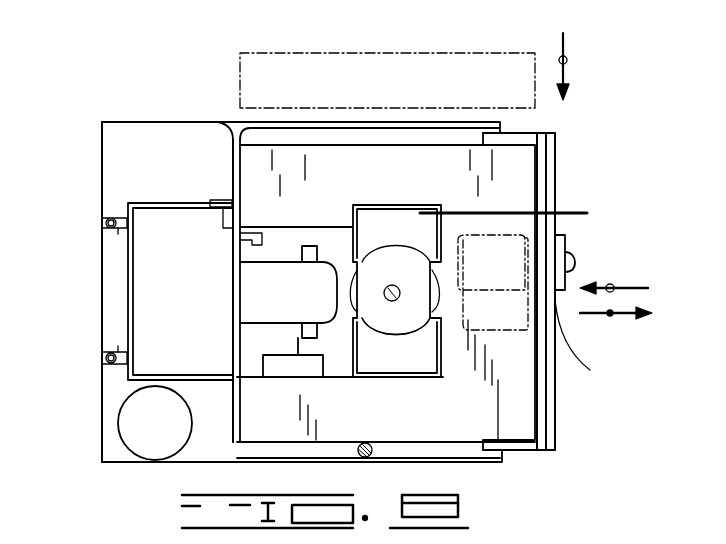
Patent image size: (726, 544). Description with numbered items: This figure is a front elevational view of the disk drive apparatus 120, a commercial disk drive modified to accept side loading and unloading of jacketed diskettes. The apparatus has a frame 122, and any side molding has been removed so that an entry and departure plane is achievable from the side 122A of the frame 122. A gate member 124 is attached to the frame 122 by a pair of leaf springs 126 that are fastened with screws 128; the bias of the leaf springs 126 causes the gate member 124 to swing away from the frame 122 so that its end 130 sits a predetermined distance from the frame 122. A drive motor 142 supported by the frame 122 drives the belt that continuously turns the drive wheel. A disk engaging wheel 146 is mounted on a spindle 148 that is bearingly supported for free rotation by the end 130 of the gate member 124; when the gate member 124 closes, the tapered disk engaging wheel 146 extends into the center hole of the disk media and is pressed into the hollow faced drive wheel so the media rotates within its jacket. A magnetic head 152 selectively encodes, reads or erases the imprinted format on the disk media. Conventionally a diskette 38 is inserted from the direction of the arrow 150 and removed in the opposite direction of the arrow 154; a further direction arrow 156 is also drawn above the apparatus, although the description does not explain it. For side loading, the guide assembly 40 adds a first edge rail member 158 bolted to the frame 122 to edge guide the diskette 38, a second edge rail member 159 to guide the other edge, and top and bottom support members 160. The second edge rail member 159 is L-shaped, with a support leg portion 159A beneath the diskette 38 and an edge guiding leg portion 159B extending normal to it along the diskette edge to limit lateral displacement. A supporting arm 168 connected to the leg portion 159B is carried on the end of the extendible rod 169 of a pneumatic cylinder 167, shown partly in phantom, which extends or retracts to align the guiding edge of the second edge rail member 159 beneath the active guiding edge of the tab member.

The disk drive apparatus 120 is at (108, 112).
The frame 122 is at (102, 162).
The side of the frame 122A is at (228, 132).
The guide assembly 40 is at (226, 126).
The first edge rail member 158 is at (233, 160).
The diskette 38 is at (298, 69).
The gate member 124 is at (183, 202).
The screws 128 is at (108, 220).
The leaf springs 126 is at (118, 230).
The drive motor 142 is at (160, 440).
The end of the gate member 130 is at (428, 200).
The magnetic head 152 is at (272, 272).
The top and bottom support members 160 is at (240, 250).
The spindle 148 is at (400, 294).
The disk engaging wheel 146 is at (418, 335).
The second edge rail member 159 is at (556, 182).
The support leg portion 159A is at (530, 137).
The edge guiding leg portion 159B is at (552, 230).
The supporting arm 168 is at (566, 246).
The pneumatic cylinder 167 is at (528, 330).
The extendible rod 169 is at (598, 372).
The insertion direction arrow 156 is at (567, 60).
The arrow 150 is at (612, 284).
The arrow 154 is at (610, 316).